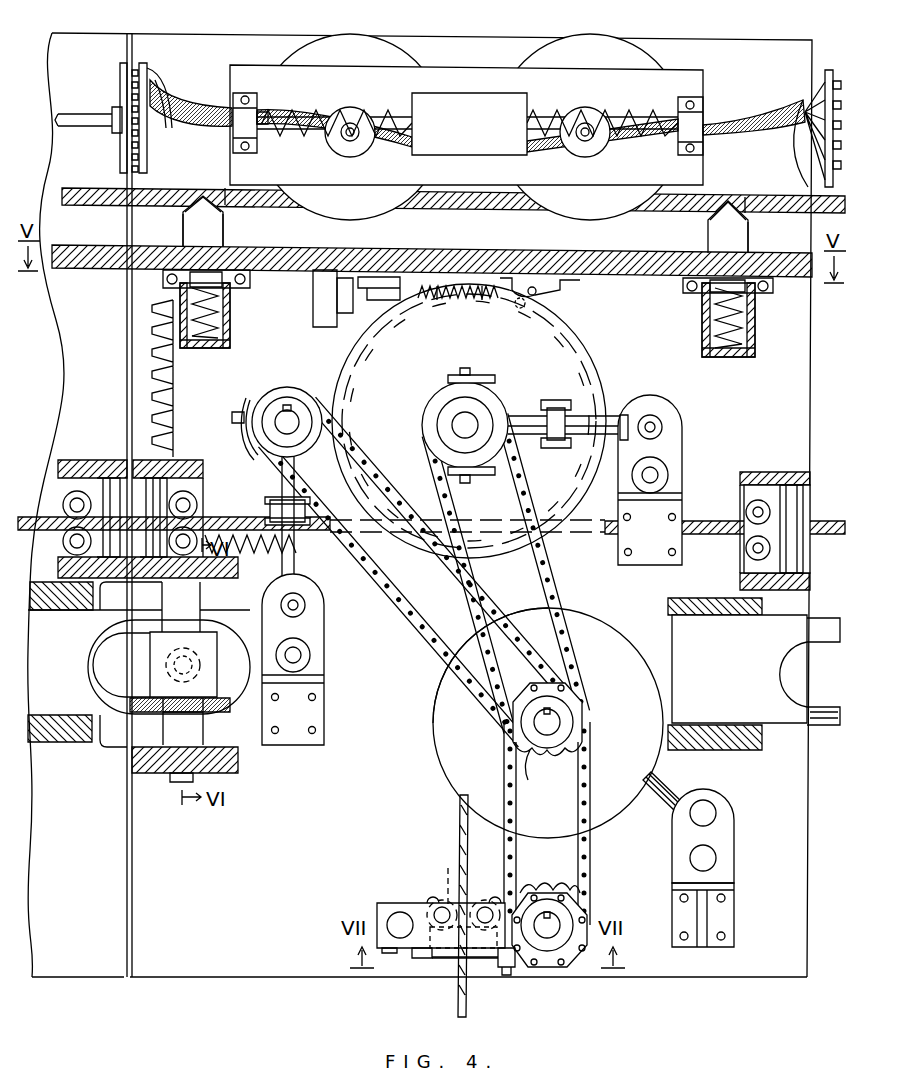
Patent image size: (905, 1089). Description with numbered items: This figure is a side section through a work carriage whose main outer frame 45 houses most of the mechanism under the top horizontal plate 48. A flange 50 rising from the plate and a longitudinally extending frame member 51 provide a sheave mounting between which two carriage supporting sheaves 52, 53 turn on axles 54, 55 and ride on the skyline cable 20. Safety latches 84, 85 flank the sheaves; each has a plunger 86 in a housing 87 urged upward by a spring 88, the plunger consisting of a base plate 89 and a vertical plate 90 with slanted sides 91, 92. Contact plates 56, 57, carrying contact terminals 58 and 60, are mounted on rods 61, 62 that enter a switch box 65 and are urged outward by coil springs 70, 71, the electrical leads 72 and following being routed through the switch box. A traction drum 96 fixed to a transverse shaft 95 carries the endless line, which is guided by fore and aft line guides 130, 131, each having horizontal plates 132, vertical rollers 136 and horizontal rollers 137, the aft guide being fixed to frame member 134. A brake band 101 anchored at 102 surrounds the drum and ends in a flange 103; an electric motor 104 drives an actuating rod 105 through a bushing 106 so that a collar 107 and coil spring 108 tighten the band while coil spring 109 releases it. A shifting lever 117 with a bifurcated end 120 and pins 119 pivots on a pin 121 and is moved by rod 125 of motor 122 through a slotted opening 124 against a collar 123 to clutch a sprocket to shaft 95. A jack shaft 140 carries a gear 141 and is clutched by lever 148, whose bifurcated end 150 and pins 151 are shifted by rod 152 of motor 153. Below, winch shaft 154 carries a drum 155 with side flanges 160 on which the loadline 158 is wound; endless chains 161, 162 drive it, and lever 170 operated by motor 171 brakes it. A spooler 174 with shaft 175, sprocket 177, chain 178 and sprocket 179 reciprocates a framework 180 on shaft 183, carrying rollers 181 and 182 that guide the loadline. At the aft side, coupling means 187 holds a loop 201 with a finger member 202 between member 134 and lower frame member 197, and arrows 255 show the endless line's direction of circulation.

The skyline cable 20 is at (108, 206).
The main outer frame 45 is at (204, 964).
The top horizontal plate 48 is at (645, 270).
The longitudinally extending flange 50 is at (738, 25).
The frame member 51 is at (687, 76).
The carriage supporting sheave 52 is at (390, 58).
The carriage supporting sheave 53 is at (552, 52).
The transversely extending axle 54 is at (360, 139).
The transversely extending axle 55 is at (578, 151).
The contact plate 56 is at (147, 68).
The contact plate 57 is at (123, 63).
The contact terminals 58 is at (153, 79).
The contact terminals 60 is at (132, 80).
The longitudinally extending rod 61 is at (285, 112).
The longitudinally extending rod 62 is at (92, 124).
The switch box 65 is at (478, 106).
The coil spring 70 is at (384, 118).
The coil spring 71 is at (552, 117).
The electrical lead 72 is at (200, 89).
The safety latch 84 is at (177, 225).
The safety latch 85 is at (702, 240).
The plunger 86 is at (223, 223).
The housing 87 is at (228, 326).
The spring 88 is at (182, 330).
The base plate 89 is at (180, 290).
The vertical plate 90 is at (190, 232).
The fore slanted side 91 is at (192, 200).
The aft slanted side 92 is at (230, 195).
The transversely extending shaft 95 is at (455, 425).
The endless line engaging traction drum 96 is at (592, 372).
The flexible brake band 101 is at (530, 303).
The band fixing point 102 is at (550, 291).
The upturned rigid flange 103 is at (470, 280).
The electric motor 104 is at (336, 272).
The actuating rod 105 is at (350, 340).
The bushing 106 is at (498, 280).
The collar 107 is at (418, 276).
The coil spring 108 is at (437, 303).
The coil spring 109 is at (483, 312).
The shifting lever 117 is at (610, 414).
The opposed pins 119 is at (467, 370).
The bifurcated end 120 is at (494, 392).
The pin 121 is at (560, 450).
The electric motor 122 is at (668, 469).
The fixed collar 123 is at (676, 420).
The slotted opening 124 is at (644, 406).
The actuating rod 125 is at (661, 404).
The endless line guide 130 is at (191, 458).
The endless line guide 131 is at (775, 616).
The horizontal plate 132 is at (752, 472).
The transversely extending frame member 134 is at (668, 606).
The vertical roller 136 is at (792, 472).
The horizontal roller 137 is at (746, 512).
The jack shaft 140 is at (292, 395).
The gear 141 is at (437, 412).
The shifting lever 148 is at (282, 487).
The bifurcated end 150 is at (254, 403).
The opposed pins 151 is at (235, 416).
The rod 152 is at (318, 621).
The electric motor 153 is at (324, 637).
The transversely extending shaft 154 is at (535, 720).
The drum 155 is at (421, 717).
The loadline 158 is at (461, 822).
The side flange 160 is at (636, 727).
The endless chain 161 is at (562, 596).
The endless chain 162 is at (448, 593).
The shifting lever 170 is at (666, 786).
The electric motor 171 is at (720, 843).
The spooler 174 is at (506, 975).
The transversely extending shaft 175 is at (575, 917).
The toothed sprocket 177 is at (566, 880).
The chain 178 is at (592, 850).
The sprocket 179 is at (535, 762).
The framework 180 is at (412, 903).
The first pair of rollers 181 is at (451, 893).
The second pair of rollers 182 is at (448, 960).
The transversely extending shaft 183 is at (390, 918).
The second coupling means 187 is at (740, 682).
The lower transverse frame member 197 is at (754, 748).
The loop 201 is at (133, 623).
The finger member 202 is at (228, 713).
The arrows 255 is at (560, 552).